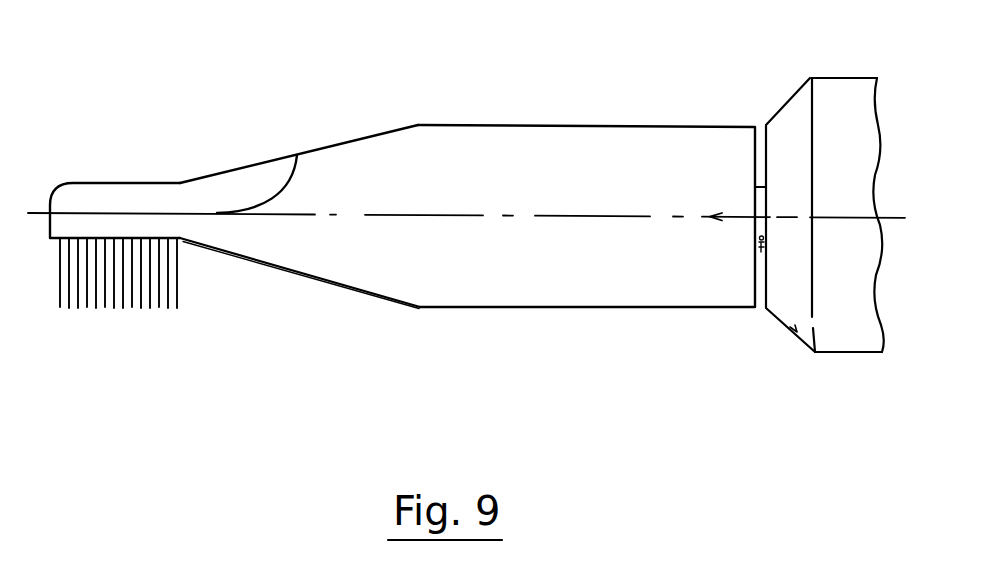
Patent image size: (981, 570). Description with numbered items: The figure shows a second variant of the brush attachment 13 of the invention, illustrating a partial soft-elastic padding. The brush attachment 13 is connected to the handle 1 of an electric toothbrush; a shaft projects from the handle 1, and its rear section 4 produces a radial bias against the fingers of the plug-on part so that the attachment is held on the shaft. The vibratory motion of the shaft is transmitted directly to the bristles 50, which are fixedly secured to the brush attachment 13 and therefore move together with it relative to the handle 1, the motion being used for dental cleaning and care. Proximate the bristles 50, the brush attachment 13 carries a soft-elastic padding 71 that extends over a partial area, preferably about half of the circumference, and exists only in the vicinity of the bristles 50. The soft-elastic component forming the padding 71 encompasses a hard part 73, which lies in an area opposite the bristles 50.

The handle 1 is at (790, 116).
The rear section 4 is at (763, 300).
The brush attachment 13 is at (548, 94).
The bristles 50 is at (122, 317).
The soft-elastic padding 71 is at (227, 186).
The hard part 73 is at (333, 267).